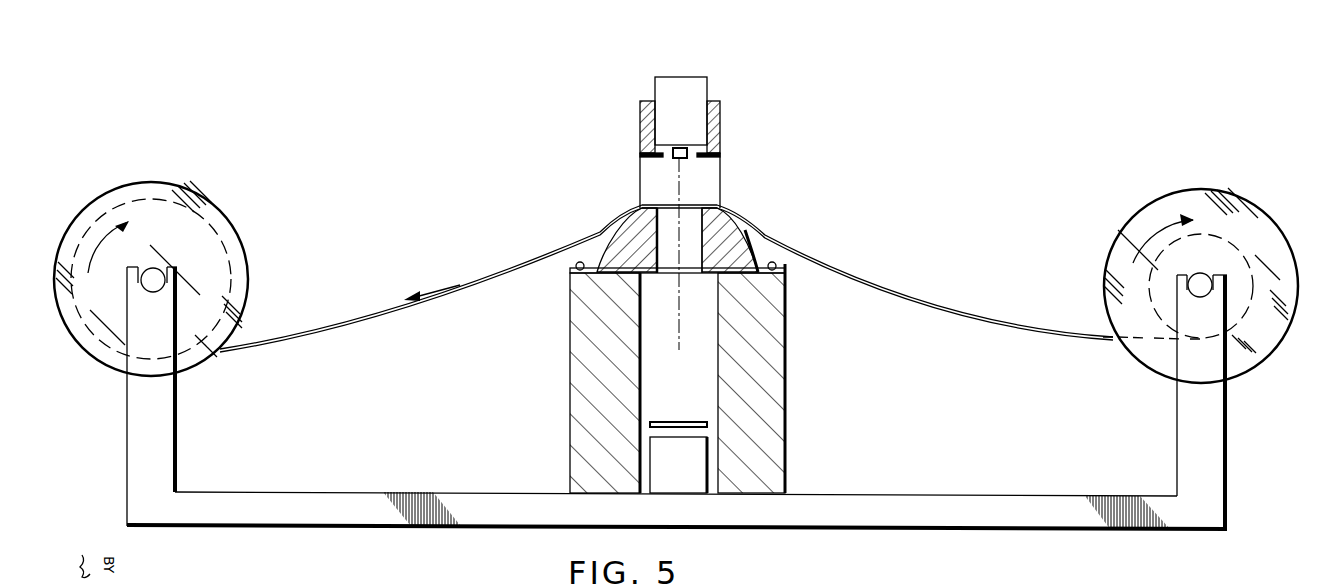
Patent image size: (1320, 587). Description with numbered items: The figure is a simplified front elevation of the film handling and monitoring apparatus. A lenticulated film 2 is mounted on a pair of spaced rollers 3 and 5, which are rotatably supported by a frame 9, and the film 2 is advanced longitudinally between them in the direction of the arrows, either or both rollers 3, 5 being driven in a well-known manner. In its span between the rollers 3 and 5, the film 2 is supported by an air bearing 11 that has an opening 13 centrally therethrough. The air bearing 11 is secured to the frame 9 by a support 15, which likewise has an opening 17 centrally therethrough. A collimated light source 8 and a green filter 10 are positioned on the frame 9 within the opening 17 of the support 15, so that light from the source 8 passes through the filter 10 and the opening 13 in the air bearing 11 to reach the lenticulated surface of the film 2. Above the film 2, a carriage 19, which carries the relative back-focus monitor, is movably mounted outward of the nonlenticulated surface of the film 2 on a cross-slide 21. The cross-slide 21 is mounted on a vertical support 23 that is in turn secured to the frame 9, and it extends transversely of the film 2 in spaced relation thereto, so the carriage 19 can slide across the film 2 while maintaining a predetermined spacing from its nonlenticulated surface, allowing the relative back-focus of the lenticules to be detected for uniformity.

The film 2 is at (1040, 336).
The roller 3 is at (1268, 225).
The roller 5 is at (188, 188).
The collimated light source 8 is at (686, 479).
The frame 9 is at (977, 520).
The green filter 10 is at (690, 421).
The air bearing 11 is at (757, 205).
The opening 13 is at (694, 220).
The support 15 is at (786, 344).
The opening 17 is at (641, 325).
The carriage 19 is at (686, 77).
The cross-slide 21 is at (721, 106).
The vertical support 23 is at (721, 168).